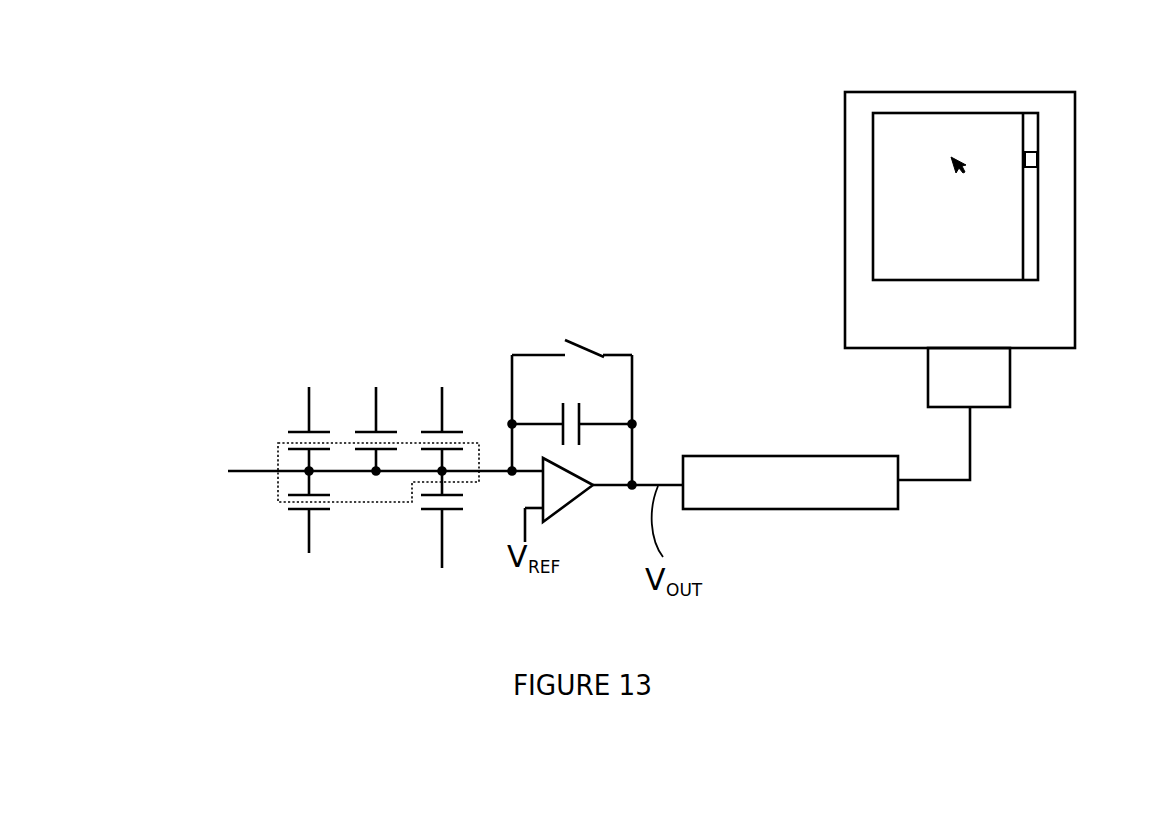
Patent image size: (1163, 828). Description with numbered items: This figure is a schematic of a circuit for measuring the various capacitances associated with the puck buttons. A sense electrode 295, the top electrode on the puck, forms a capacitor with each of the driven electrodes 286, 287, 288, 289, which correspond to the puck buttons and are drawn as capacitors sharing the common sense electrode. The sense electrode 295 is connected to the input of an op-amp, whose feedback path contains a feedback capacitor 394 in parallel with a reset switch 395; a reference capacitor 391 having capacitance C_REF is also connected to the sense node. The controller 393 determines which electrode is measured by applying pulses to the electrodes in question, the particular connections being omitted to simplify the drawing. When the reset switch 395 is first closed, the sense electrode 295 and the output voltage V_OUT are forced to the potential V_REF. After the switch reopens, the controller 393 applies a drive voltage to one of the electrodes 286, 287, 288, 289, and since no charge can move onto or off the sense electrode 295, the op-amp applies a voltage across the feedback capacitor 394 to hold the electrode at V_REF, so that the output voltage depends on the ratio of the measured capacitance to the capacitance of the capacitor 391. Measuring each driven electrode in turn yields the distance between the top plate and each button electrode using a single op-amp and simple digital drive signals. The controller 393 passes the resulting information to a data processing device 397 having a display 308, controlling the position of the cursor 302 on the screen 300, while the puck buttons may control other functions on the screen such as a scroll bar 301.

The electrode 286 is at (306, 429).
The electrode 287 is at (373, 429).
The electrode 288 is at (440, 429).
The electrode 289 is at (298, 511).
The sense electrode 295 is at (272, 458).
The capacitor 391 is at (429, 510).
The controller 393 is at (768, 503).
The feedback capacitor 394 is at (586, 413).
The reset switch 395 is at (581, 348).
The data processing device 397 is at (995, 404).
The screen 300 is at (975, 281).
The scroll bar 301 is at (1038, 150).
The cursor 302 is at (955, 157).
The display 308 is at (933, 92).